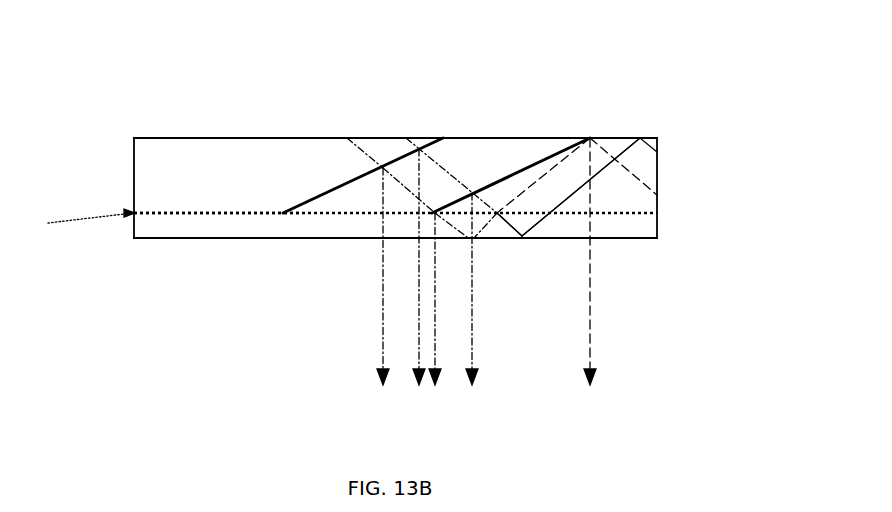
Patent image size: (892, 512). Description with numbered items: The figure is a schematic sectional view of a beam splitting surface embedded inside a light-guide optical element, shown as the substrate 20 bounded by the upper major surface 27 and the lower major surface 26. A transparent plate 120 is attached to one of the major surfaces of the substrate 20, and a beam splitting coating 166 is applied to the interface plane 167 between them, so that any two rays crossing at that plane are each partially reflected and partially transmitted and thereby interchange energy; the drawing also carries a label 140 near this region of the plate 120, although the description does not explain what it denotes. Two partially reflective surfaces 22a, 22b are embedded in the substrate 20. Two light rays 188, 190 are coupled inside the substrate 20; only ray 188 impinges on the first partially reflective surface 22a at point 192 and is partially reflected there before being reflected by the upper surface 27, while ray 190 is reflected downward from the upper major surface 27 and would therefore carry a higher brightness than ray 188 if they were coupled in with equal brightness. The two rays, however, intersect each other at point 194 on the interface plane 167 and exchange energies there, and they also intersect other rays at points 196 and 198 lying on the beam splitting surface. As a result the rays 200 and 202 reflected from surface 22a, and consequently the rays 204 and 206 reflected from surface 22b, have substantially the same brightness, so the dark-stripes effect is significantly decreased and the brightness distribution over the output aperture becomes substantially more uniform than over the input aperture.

The light-guide optical element 20 is at (178, 168).
The upper major surface 27 is at (192, 138).
The lower major surface 26 is at (620, 238).
The beam splitting coating 166 is at (178, 212).
The lower layer 140 is at (246, 214).
The transparent plate 120 is at (292, 224).
The interface plane 167 is at (73, 222).
The partially reflective surface 22b is at (317, 196).
The first partially reflective surface 22a is at (540, 162).
The intersection point 198 is at (433, 210).
The light ray 206 is at (383, 389).
The light ray 204 is at (418, 389).
The light ray 202 is at (436, 389).
The light ray 200 is at (471, 389).
The point 192 is at (589, 138).
The light ray 188 is at (658, 193).
The light ray 190 is at (658, 152).
The intersection point 196 is at (548, 214).
The intersection point 194 is at (493, 214).